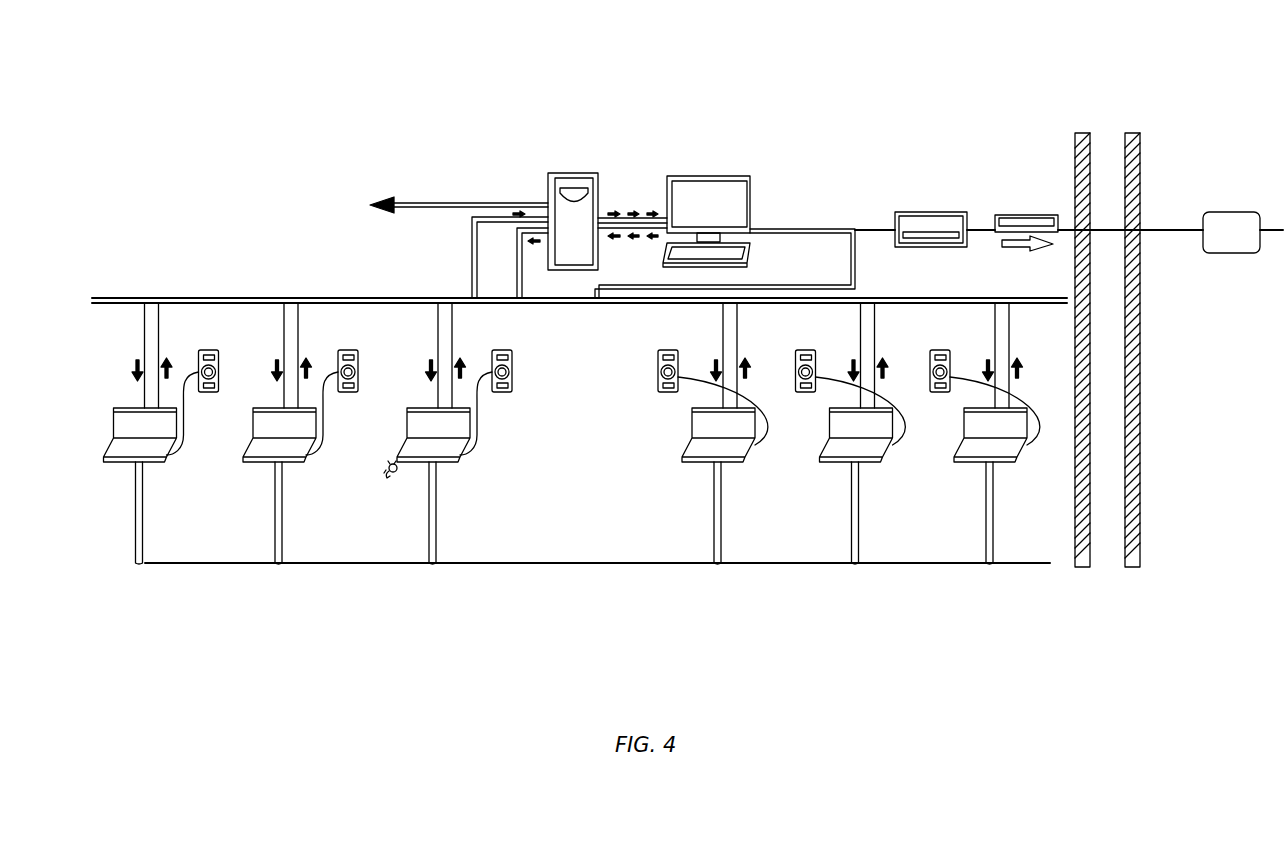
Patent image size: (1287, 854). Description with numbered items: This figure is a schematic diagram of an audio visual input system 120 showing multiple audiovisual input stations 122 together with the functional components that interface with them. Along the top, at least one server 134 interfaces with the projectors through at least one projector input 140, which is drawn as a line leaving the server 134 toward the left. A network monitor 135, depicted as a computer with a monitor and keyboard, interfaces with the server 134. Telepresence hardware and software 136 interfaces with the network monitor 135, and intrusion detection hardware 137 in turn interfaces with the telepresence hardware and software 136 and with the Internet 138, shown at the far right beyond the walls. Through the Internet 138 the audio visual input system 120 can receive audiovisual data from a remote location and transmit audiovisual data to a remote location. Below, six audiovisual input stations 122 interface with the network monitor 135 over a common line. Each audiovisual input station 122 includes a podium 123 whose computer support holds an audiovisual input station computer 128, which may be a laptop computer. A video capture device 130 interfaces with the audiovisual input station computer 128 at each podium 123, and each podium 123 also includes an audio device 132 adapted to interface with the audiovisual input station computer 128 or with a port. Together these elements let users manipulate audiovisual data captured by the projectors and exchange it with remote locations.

The audio visual input system 120 is at (411, 153).
The audiovisual input station 122 is at (444, 574).
The podium 123 is at (438, 517).
The audiovisual input station computer 128 is at (443, 445).
The video capture device 130 is at (508, 390).
The audio device 132 is at (398, 474).
The server 134 is at (548, 182).
The network monitor 135 is at (750, 186).
The telepresence hardware and software 136 is at (938, 247).
The intrusion detection hardware 137 is at (1033, 215).
The Internet 138 is at (1237, 253).
The projector input 140 is at (440, 208).